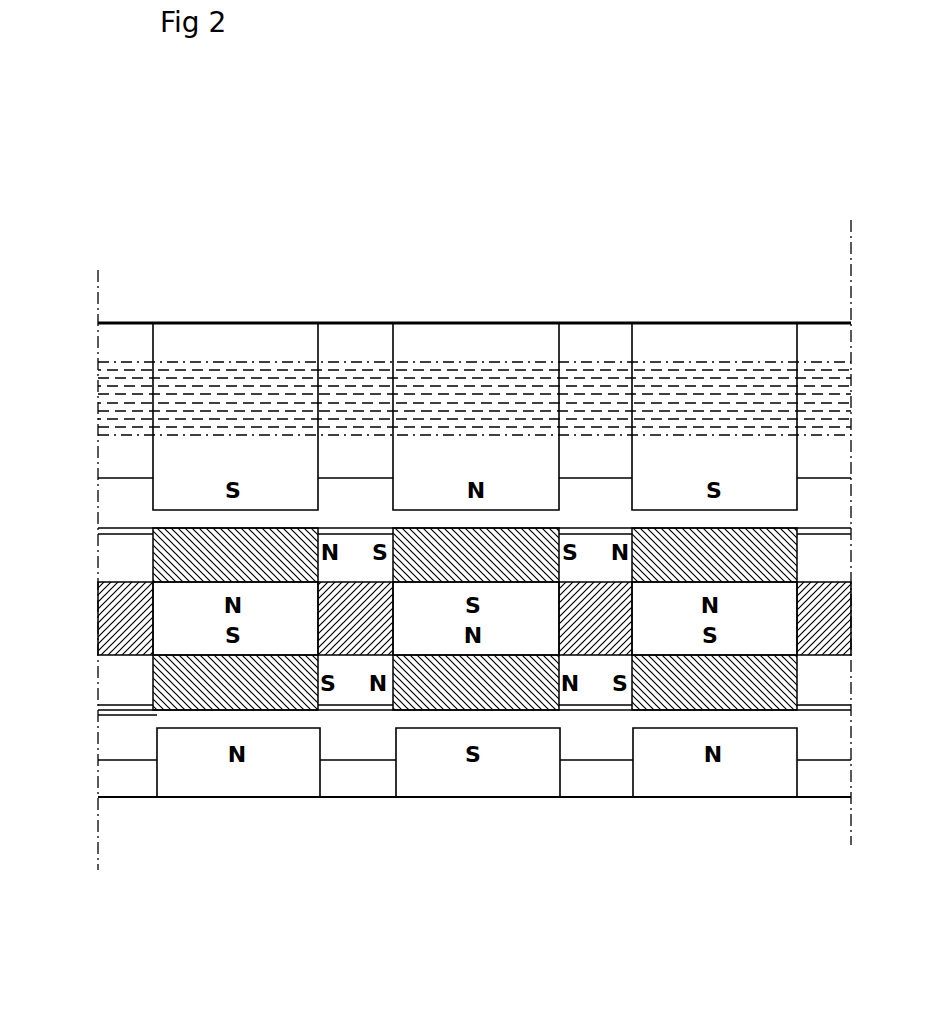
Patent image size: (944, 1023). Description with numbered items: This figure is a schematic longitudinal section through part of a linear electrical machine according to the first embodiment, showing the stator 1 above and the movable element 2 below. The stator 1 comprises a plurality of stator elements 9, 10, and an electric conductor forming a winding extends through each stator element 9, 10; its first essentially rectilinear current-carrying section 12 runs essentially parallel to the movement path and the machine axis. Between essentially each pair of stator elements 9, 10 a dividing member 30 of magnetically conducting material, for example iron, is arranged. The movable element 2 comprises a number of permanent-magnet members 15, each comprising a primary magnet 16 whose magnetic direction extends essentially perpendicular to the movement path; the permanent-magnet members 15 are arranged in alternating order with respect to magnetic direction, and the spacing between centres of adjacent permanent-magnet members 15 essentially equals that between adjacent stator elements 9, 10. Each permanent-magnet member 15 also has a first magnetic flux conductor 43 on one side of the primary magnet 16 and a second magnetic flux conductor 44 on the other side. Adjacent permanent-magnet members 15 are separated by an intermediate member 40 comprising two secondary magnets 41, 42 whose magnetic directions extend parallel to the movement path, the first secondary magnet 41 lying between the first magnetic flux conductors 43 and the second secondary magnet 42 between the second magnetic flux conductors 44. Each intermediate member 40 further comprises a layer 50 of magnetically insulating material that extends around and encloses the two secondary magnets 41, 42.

The stator 1 is at (190, 322).
The movable element 2 is at (123, 713).
The stator element 9 is at (248, 345).
The stator element 10 is at (455, 343).
The first essentially rectilinear current-carrying section 12 is at (377, 405).
The permanent-magnet member 15 is at (178, 710).
The primary magnet 16 is at (258, 643).
The dividing member 30 is at (335, 347).
The intermediate member 40 is at (345, 710).
The first secondary magnet 41 is at (365, 688).
The second secondary magnet 42 is at (365, 563).
The first magnetic flux conductor 43 is at (294, 657).
The second magnetic flux conductor 44 is at (210, 560).
The layer of magnetically insulating material 50 is at (365, 530).